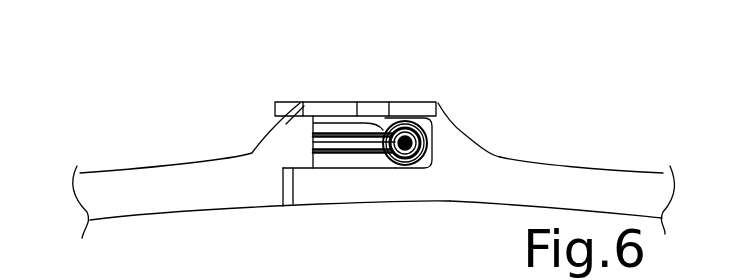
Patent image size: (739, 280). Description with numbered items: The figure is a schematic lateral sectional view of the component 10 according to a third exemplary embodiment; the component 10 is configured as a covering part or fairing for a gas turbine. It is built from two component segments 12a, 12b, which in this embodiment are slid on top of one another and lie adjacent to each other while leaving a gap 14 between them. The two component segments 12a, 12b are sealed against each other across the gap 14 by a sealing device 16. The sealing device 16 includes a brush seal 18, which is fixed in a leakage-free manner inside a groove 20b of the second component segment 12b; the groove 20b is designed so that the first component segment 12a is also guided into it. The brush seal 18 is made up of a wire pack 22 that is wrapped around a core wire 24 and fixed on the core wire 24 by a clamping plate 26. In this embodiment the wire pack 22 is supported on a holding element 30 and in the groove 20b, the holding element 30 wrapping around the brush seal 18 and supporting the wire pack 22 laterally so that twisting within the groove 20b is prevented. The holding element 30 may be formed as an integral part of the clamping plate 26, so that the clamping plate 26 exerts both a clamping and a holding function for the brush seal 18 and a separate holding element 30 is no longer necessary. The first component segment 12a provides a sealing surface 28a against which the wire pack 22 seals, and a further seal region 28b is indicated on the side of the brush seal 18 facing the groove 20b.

The component 10 is at (193, 47).
The first component segment 12a is at (133, 177).
The second component segment 12b is at (620, 178).
The gap 14 is at (283, 207).
The sealing device 16 is at (462, 90).
The brush seal 18 is at (440, 140).
The groove 20b is at (402, 107).
The wire pack 22 is at (350, 165).
The core wire 24 is at (403, 170).
The clamping plate 26 is at (438, 102).
The sealing surface 28a is at (278, 116).
The second seal 28b is at (421, 176).
The holding element 30 is at (374, 162).